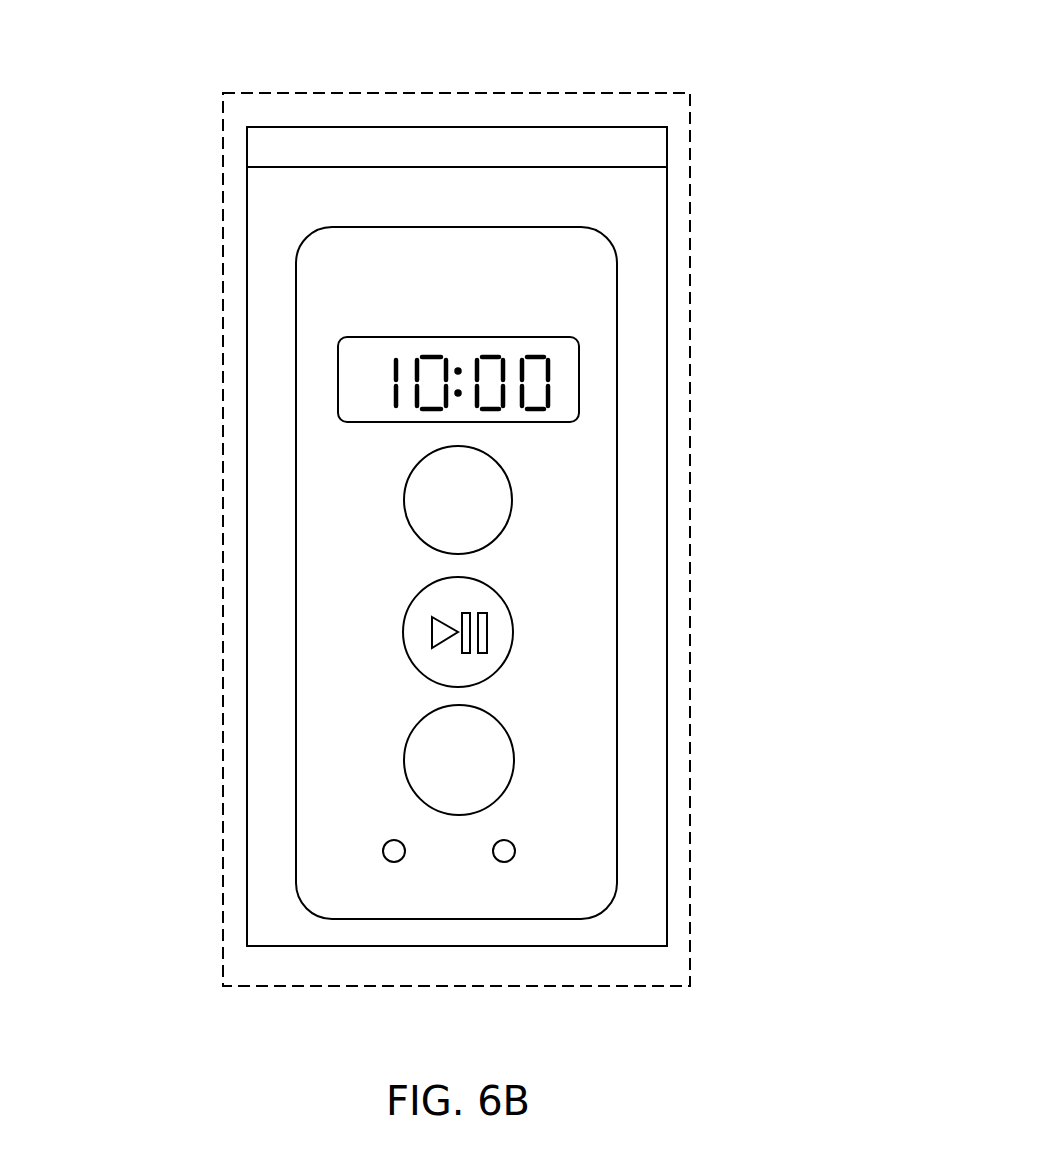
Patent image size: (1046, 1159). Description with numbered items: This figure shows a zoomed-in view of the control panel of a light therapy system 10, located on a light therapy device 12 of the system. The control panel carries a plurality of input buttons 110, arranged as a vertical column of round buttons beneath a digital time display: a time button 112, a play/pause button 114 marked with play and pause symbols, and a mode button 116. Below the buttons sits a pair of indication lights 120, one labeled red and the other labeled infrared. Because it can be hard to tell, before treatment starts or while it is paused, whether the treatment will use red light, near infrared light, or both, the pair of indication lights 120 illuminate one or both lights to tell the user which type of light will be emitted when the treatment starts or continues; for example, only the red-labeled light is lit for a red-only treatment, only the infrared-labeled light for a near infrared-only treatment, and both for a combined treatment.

The light therapy system 10 is at (676, 58).
The light therapy device 12 is at (246, 226).
The plurality of input buttons 110 is at (461, 605).
The time button 112 is at (518, 495).
The play/pause button 114 is at (518, 643).
The mode button 116 is at (518, 757).
The pair of indication lights 120 is at (354, 853).